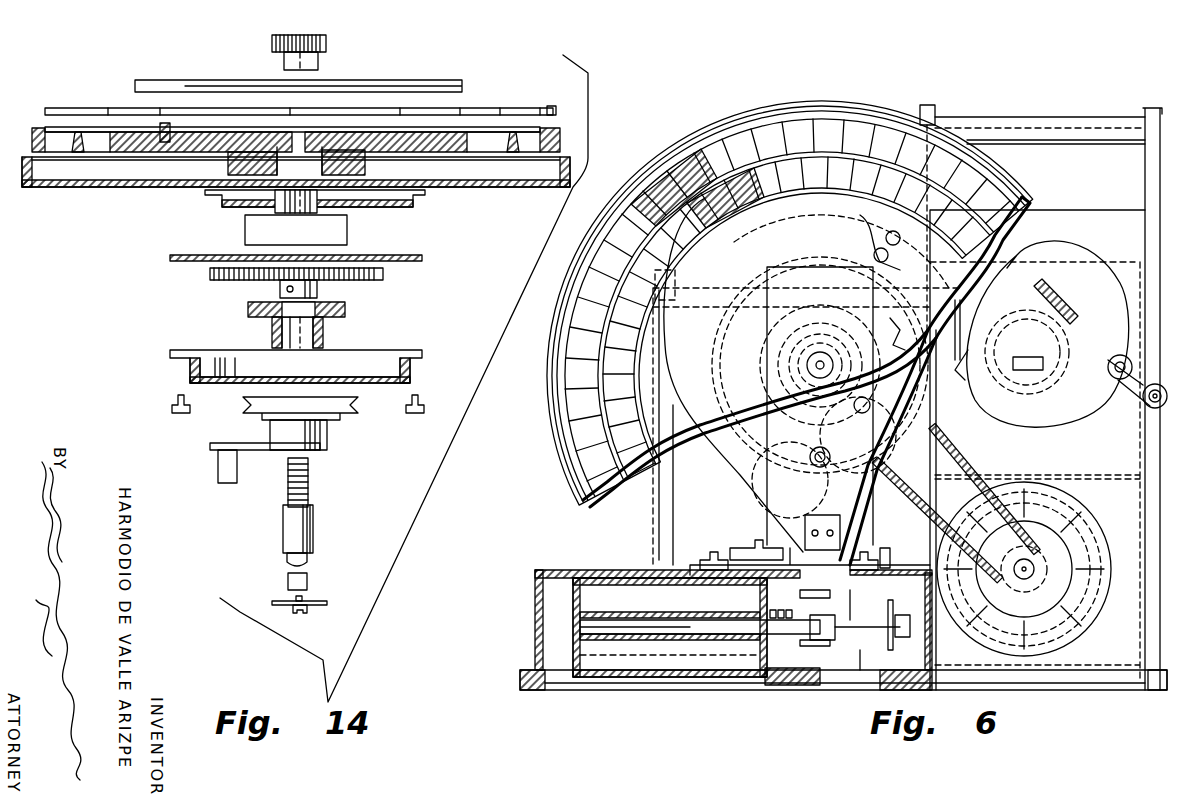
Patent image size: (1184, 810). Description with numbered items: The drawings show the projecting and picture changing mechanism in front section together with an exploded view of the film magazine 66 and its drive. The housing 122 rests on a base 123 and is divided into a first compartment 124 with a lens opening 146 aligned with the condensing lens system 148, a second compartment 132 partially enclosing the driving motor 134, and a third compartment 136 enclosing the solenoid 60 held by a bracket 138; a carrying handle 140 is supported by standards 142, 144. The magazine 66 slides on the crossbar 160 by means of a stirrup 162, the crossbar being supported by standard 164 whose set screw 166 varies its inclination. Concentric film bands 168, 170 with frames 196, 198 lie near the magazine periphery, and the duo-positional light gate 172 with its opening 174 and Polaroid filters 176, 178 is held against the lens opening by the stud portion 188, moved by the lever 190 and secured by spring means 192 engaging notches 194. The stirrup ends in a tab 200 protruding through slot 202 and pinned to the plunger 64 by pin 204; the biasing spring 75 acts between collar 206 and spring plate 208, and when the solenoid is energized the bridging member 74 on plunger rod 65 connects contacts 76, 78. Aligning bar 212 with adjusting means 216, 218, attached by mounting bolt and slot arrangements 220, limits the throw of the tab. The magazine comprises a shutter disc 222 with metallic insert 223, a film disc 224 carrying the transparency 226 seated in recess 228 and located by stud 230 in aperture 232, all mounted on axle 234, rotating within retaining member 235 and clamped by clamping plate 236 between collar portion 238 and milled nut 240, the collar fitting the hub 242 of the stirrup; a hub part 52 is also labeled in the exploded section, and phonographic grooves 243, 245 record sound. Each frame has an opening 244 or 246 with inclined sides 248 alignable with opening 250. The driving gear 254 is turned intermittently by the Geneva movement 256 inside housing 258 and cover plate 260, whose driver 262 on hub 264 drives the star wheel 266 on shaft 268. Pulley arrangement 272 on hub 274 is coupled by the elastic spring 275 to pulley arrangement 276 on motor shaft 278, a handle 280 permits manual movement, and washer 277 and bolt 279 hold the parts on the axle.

In FIG. 14, the hub 52 is at (370, 165).
In FIG. 6, the solenoid 60 is at (580, 590).
In FIG. 6, the plunger 64 is at (740, 640).
In FIG. 6, the plunger rod 65 is at (880, 620).
In FIG. 14, the film magazine 66 is at (92, 75).
In FIG. 6, the film magazine 66 is at (545, 386).
In FIG. 6, the bridging member 74 is at (880, 660).
In FIG. 6, the biasing spring 75 is at (778, 615).
In FIG. 6, the contact 76 is at (868, 603).
In FIG. 6, the contact 78 is at (868, 652).
In FIG. 6, the housing 122 is at (530, 657).
In FIG. 6, the base 123 is at (1152, 690).
In FIG. 6, the first compartment 124 is at (1040, 205).
In FIG. 6, the second compartment 132 is at (1110, 680).
In FIG. 6, the driving motor 134 is at (1080, 545).
In FIG. 6, the third compartment 136 is at (585, 575).
In FIG. 6, the bracket 138 is at (535, 590).
In FIG. 6, the carrying handle 140 is at (1110, 120).
In FIG. 6, the standard 142 is at (935, 112).
In FIG. 6, the standard 144 is at (1143, 170).
In FIG. 6, the lens opening 146 is at (1060, 380).
In FIG. 6, the condensing lens system 148 is at (1070, 330).
In FIG. 6, the crossbar 160 is at (705, 300).
In FIG. 14, the stirrup 162 is at (245, 232).
In FIG. 6, the stirrup 162 is at (770, 510).
In FIG. 6, the standard 164 is at (668, 507).
In FIG. 6, the set screw 166 is at (700, 250).
In FIG. 14, the film band 168 is at (62, 107).
In FIG. 6, the film band 168 is at (778, 125).
In FIG. 14, the film band 170 is at (92, 108).
In FIG. 6, the film band 170 is at (770, 175).
In FIG. 6, the light gate 172 is at (1075, 260).
In FIG. 6, the opening 174 is at (1030, 370).
In FIG. 6, the Polaroid filter 176 is at (1050, 300).
In FIG. 6, the Polaroid filter 178 is at (1072, 316).
In FIG. 6, the stud portion 188 is at (1112, 360).
In FIG. 6, the lever 190 is at (1145, 398).
In FIG. 6, the spring means 192 is at (995, 300).
In FIG. 6, the notches 194 is at (1005, 295).
In FIG. 6, the motion picture frames 196 is at (862, 135).
In FIG. 6, the frames 198 is at (880, 183).
In FIG. 6, the tab 200 is at (838, 593).
In FIG. 6, the slot 202 is at (760, 585).
In FIG. 6, the pin 204 is at (828, 620).
In FIG. 6, the collar 206 is at (800, 645).
In FIG. 6, the spring plate 208 is at (763, 603).
In FIG. 6, the aligning bar 212 is at (790, 548).
In FIG. 6, the adjusting means 216 is at (735, 545).
In FIG. 6, the adjusting means 218 is at (892, 548).
In FIG. 6, the mounting bolt and slot arrangements 220 is at (705, 545).
In FIG. 14, the shutter disc 222 is at (565, 145).
In FIG. 6, the shutter disc 222 is at (745, 125).
In FIG. 14, the metallic insert 223 is at (345, 135).
In FIG. 14, the film disc 224 is at (553, 110).
In FIG. 6, the film disc 224 is at (835, 125).
In FIG. 14, the transparency 226 is at (430, 92).
In FIG. 6, the transparency 226 is at (750, 220).
In FIG. 14, the recess 228 is at (40, 128).
In FIG. 14, the stud 230 is at (170, 128).
In FIG. 14, the aperture 232 is at (170, 108).
In FIG. 14, the axle 234 is at (308, 490).
In FIG. 6, the axle 234 is at (820, 352).
In FIG. 14, the retaining member 235 is at (570, 170).
In FIG. 6, the retaining member 235 is at (600, 500).
In FIG. 14, the clamping plate 236 is at (440, 88).
In FIG. 6, the clamping plate 236 is at (782, 252).
In FIG. 14, the collar portion 238 is at (313, 510).
In FIG. 6, the collar portion 238 is at (778, 356).
In FIG. 14, the milled nut 240 is at (312, 38).
In FIG. 6, the milled nut 240 is at (850, 360).
In FIG. 14, the hub 242 is at (320, 212).
In FIG. 6, the hub 242 is at (818, 352).
In FIG. 14, the phonographic grooves 243 is at (62, 107).
In FIG. 14, the opening 244 is at (70, 152).
In FIG. 6, the opening 244 is at (660, 185).
In FIG. 14, the phonographic grooves 245 is at (140, 105).
In FIG. 14, the opening 246 is at (100, 152).
In FIG. 6, the opening 246 is at (728, 193).
In FIG. 14, the sides 248 is at (68, 138).
In FIG. 6, the sides 248 is at (703, 150).
In FIG. 14, the opening 250 is at (80, 187).
In FIG. 14, the driving gear 254 is at (383, 275).
In FIG. 6, the driving gear 254 is at (718, 338).
In FIG. 6, the Geneva movement 256 is at (722, 415).
In FIG. 14, the housing 258 is at (425, 368).
In FIG. 6, the housing 258 is at (745, 450).
In FIG. 14, the cover plate 260 is at (418, 258).
In FIG. 14, the driver 262 is at (345, 310).
In FIG. 6, the driver 262 is at (775, 326).
In FIG. 14, the hub 264 is at (318, 287).
In FIG. 6, the star wheel 266 is at (765, 498).
In FIG. 6, the shaft 268 is at (790, 475).
In FIG. 14, the pulley arrangement 272 is at (345, 415).
In FIG. 6, the pulley arrangement 272 is at (780, 370).
In FIG. 14, the hub 274 is at (323, 335).
In FIG. 6, the spring 275 is at (960, 455).
In FIG. 6, the pulley arrangement 276 is at (1077, 537).
In FIG. 14, the washer 277 is at (327, 603).
In FIG. 6, the shaft 278 is at (1020, 577).
In FIG. 14, the bolt 279 is at (305, 612).
In FIG. 14, the handle 280 is at (220, 462).